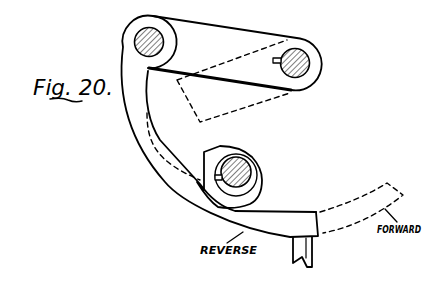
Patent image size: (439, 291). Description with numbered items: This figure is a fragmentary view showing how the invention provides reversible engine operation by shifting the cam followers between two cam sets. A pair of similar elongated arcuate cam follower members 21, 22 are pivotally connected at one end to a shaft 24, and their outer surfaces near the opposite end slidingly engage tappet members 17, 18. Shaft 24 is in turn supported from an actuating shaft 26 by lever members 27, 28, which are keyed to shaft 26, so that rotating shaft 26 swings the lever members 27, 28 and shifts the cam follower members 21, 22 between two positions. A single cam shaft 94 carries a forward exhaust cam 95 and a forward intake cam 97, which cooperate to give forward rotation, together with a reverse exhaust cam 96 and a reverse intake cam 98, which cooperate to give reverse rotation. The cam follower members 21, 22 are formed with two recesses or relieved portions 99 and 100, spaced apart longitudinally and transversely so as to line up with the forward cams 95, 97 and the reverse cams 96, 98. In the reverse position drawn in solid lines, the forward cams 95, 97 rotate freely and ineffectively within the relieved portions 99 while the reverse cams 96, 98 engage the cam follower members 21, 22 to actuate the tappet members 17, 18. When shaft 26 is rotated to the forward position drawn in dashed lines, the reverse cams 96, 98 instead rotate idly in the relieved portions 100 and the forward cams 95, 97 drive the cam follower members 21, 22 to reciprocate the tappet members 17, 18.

The tappet 17 is at (335, 252).
The tappet 18 is at (313, 250).
The cam follower member 21 is at (219, 126).
The cam follower member 22 is at (170, 187).
The shaft 24 is at (140, 45).
The shaft 26 is at (297, 62).
The lever member 27 is at (235, 65).
The lever member 28 is at (257, 32).
The cam shaft 94 is at (250, 168).
The forward exhaust cam 95 is at (262, 166).
The reverse exhaust cam 96 is at (262, 166).
The forward intake cam 97 is at (256, 191).
The reverse intake cam 98 is at (262, 166).
The relieved portion 99 is at (213, 208).
The relieved portion 100 is at (150, 155).